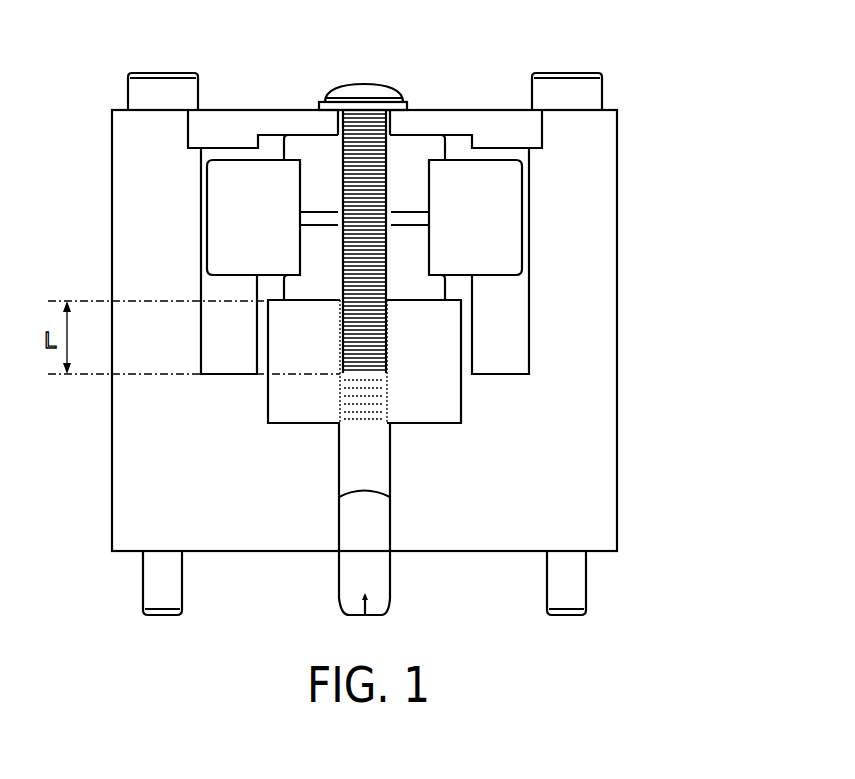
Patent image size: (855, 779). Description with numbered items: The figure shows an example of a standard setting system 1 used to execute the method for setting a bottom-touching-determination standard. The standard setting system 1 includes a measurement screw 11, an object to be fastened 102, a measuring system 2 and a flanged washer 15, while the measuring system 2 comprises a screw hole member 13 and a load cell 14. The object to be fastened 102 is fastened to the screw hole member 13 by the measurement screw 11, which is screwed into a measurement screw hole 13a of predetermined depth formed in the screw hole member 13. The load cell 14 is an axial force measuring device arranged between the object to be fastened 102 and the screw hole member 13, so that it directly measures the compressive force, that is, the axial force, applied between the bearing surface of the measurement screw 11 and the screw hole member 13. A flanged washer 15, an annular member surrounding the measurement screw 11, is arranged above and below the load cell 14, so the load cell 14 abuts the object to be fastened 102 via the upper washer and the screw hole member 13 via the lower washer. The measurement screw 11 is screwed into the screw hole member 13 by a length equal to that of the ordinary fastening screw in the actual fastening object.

The standard setting system 1 is at (641, 38).
The measuring system 2 is at (665, 200).
The measurement screw 11 is at (376, 90).
The screw hole member 13 is at (442, 408).
The measurement screw hole 13a is at (384, 413).
The load cell 14 is at (505, 217).
The flanged washer 15 is at (312, 271).
The object to be fastened 102 is at (481, 113).